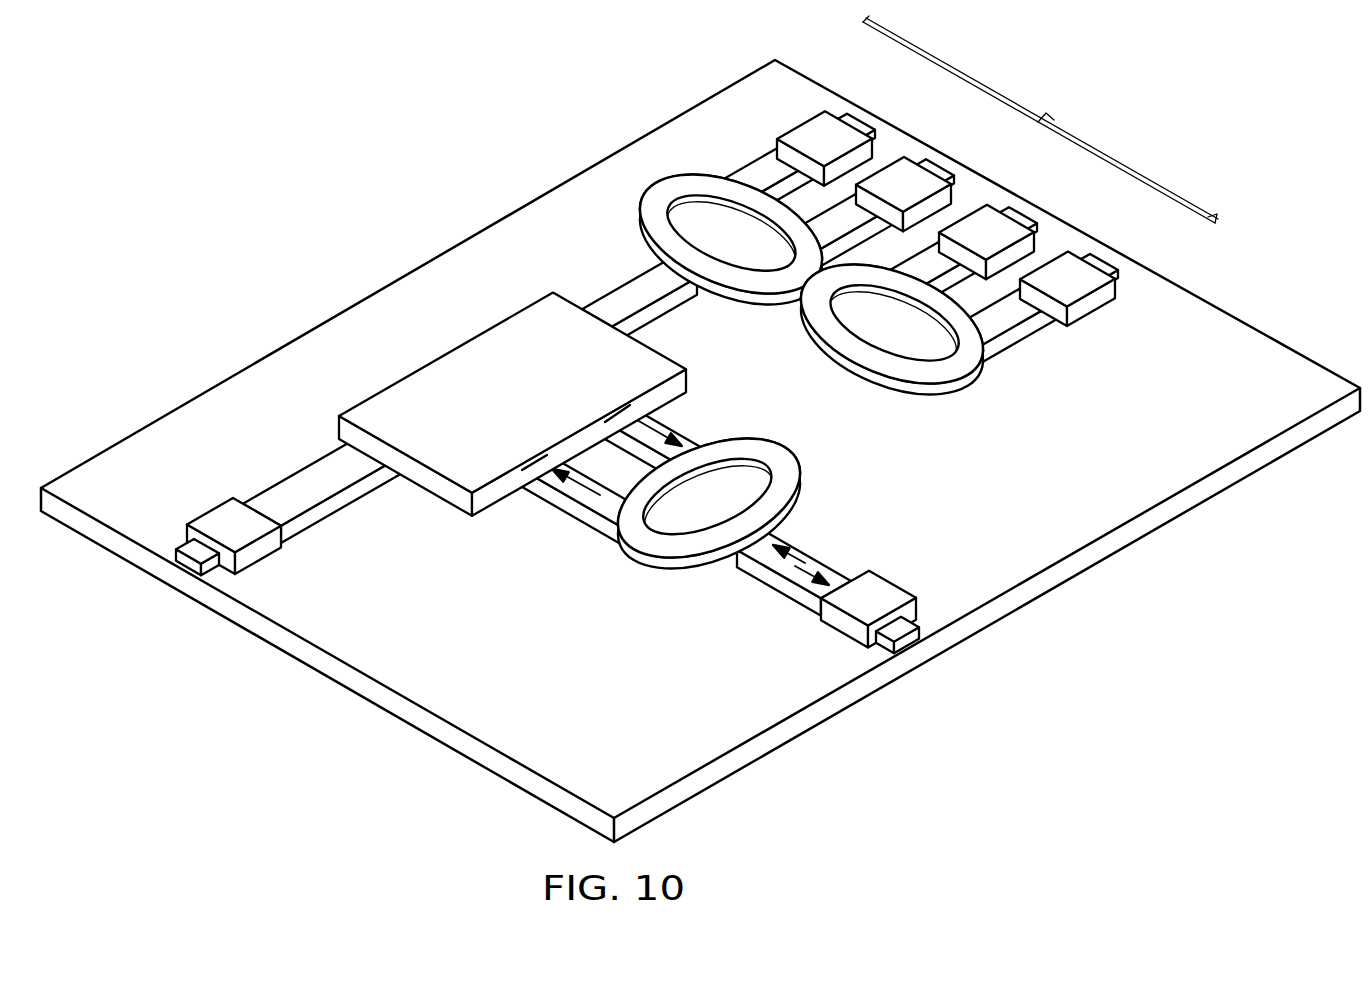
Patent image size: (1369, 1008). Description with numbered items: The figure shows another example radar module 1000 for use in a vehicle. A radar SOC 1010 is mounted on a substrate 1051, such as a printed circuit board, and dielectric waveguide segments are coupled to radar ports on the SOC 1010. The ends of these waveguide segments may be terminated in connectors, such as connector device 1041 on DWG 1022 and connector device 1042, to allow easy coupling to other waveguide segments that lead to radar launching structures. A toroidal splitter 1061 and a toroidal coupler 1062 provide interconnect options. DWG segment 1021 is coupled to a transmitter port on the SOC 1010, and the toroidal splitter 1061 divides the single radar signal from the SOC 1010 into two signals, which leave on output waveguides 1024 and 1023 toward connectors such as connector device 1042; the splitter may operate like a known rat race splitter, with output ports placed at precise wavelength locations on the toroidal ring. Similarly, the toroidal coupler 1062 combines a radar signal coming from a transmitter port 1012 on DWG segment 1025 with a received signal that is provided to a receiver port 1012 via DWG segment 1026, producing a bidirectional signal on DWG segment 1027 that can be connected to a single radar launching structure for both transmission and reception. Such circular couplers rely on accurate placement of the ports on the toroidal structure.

The radar module 1000 is at (144, 273).
The substrate 1051 is at (432, 274).
The radar SOC 1010 is at (443, 488).
The transmitter port / receiver port 1012 is at (627, 417).
The DWG segment 1022 is at (316, 474).
The connector device 1041 is at (221, 517).
The DWG segment 1021 is at (658, 306).
The toroidal splitter 1061 is at (638, 221).
The waveguide 1024 is at (757, 173).
The waveguide 1023 is at (873, 208).
The connector device 1042 is at (845, 135).
The DWG segment 1025 is at (653, 413).
The DWG segment 1026 is at (567, 488).
The toroidal coupler 1062 is at (697, 578).
The DWG segment 1027 is at (812, 553).